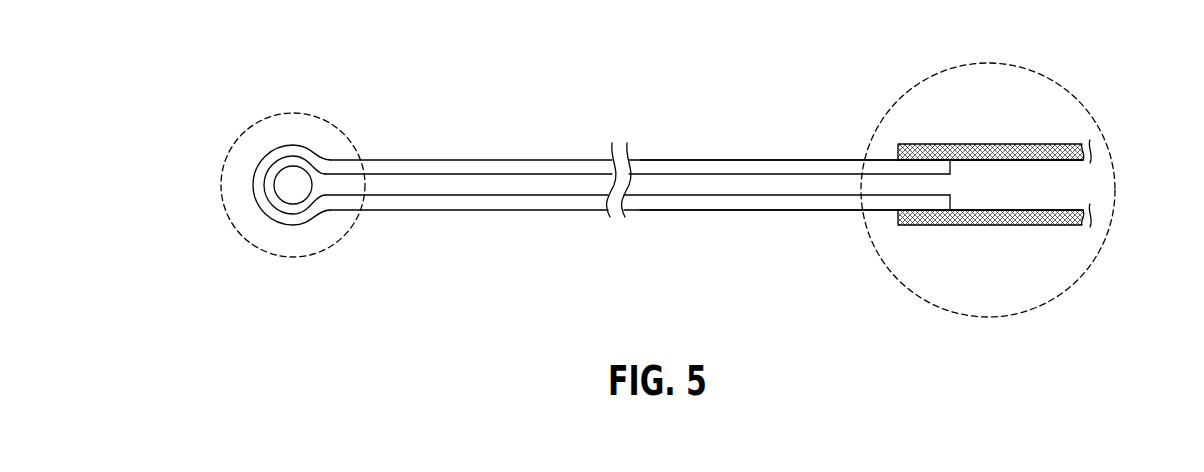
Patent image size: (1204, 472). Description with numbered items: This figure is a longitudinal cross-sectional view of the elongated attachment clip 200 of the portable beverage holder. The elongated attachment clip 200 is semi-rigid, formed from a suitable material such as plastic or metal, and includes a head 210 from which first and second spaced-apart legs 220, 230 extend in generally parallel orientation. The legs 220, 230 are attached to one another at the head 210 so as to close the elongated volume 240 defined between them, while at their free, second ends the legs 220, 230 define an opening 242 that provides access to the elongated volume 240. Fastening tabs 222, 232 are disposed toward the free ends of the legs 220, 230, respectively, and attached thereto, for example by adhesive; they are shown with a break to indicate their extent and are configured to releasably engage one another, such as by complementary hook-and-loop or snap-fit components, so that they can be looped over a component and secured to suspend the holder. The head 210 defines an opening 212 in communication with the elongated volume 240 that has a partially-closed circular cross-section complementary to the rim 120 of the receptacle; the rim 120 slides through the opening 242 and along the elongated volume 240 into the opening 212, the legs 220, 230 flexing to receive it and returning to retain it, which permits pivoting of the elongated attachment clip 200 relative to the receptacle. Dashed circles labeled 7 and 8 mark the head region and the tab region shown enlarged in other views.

The elongated attachment clip 200 is at (560, 123).
The first leg 220 is at (438, 167).
The head 210 is at (300, 152).
The opening 212 is at (330, 187).
The elongated volume 240 is at (447, 183).
The opening 242 is at (948, 182).
The second leg 230 is at (687, 202).
The rim 120 is at (285, 188).
The fastening tab 222 is at (1058, 143).
The fastening tab 232 is at (1058, 225).
The detail circle for FIG. 7 is at (223, 208).
The detail circle for FIG. 8 is at (883, 263).